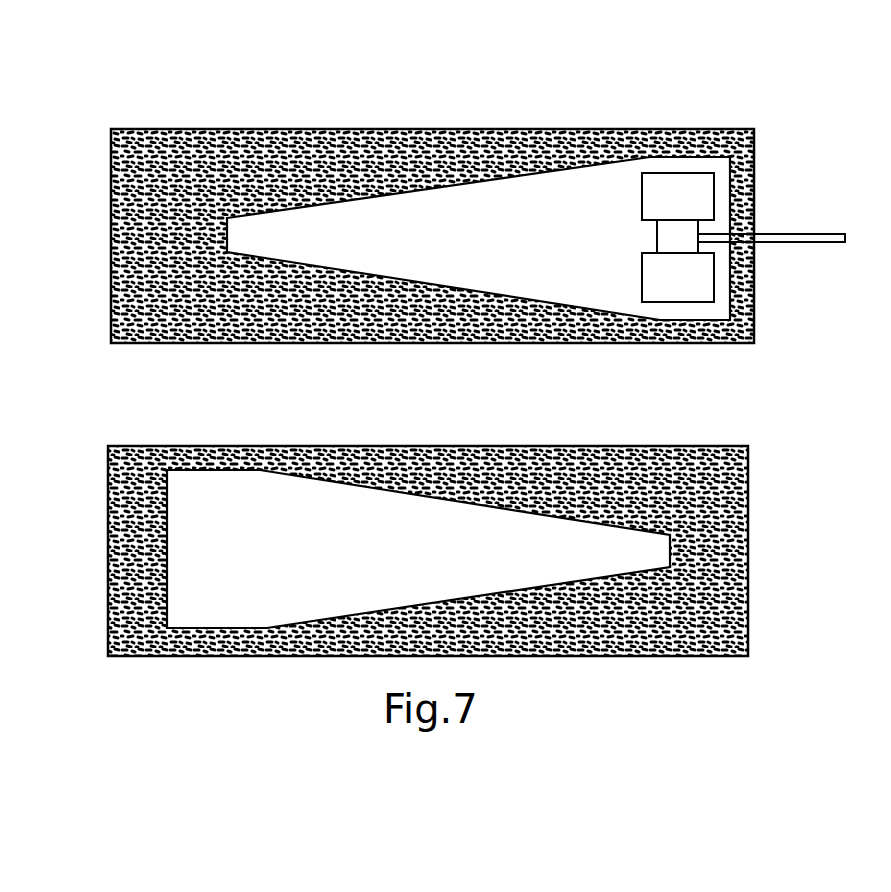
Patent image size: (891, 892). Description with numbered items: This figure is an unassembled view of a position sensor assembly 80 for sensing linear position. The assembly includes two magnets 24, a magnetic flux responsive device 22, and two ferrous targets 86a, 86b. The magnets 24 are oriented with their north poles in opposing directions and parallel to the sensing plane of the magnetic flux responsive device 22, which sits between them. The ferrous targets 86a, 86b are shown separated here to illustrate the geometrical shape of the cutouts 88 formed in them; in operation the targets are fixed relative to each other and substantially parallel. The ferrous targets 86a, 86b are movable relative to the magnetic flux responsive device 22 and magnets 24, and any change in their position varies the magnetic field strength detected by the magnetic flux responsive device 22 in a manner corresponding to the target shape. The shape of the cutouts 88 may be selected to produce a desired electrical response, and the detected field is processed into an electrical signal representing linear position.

The position sensor assembly 80 is at (710, 88).
The ferrous target 86a is at (385, 129).
The ferrous target 86b is at (383, 446).
The cutouts 88 is at (502, 254).
The magnets 24 is at (714, 195).
The magnetic flux responsive device 22 is at (657, 236).